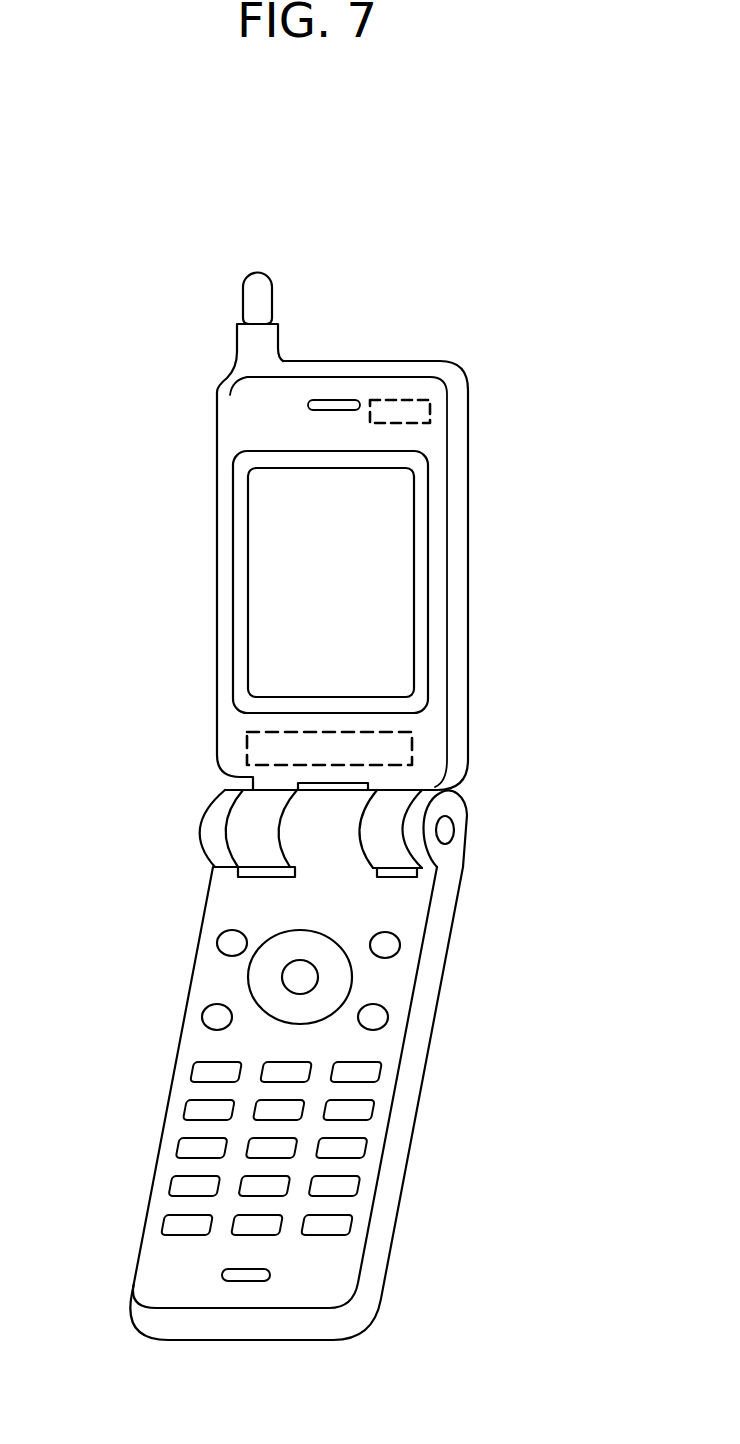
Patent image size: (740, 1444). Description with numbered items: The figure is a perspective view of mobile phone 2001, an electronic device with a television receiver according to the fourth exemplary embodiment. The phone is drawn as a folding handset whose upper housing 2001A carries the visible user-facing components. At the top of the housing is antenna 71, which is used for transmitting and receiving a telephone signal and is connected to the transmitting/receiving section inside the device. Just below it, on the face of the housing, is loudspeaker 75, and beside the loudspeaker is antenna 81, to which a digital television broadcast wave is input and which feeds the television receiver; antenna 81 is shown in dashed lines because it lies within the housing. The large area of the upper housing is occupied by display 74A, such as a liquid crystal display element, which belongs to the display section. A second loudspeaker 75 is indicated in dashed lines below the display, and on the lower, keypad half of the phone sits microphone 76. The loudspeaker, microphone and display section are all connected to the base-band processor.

The mobile phone 2001 is at (530, 408).
The upper housing 2001A is at (216, 590).
The antenna 71 is at (253, 297).
The loudspeaker 75 is at (308, 403).
The antenna 81 is at (377, 398).
The display 74A is at (398, 573).
The microphone 76 is at (220, 1270).